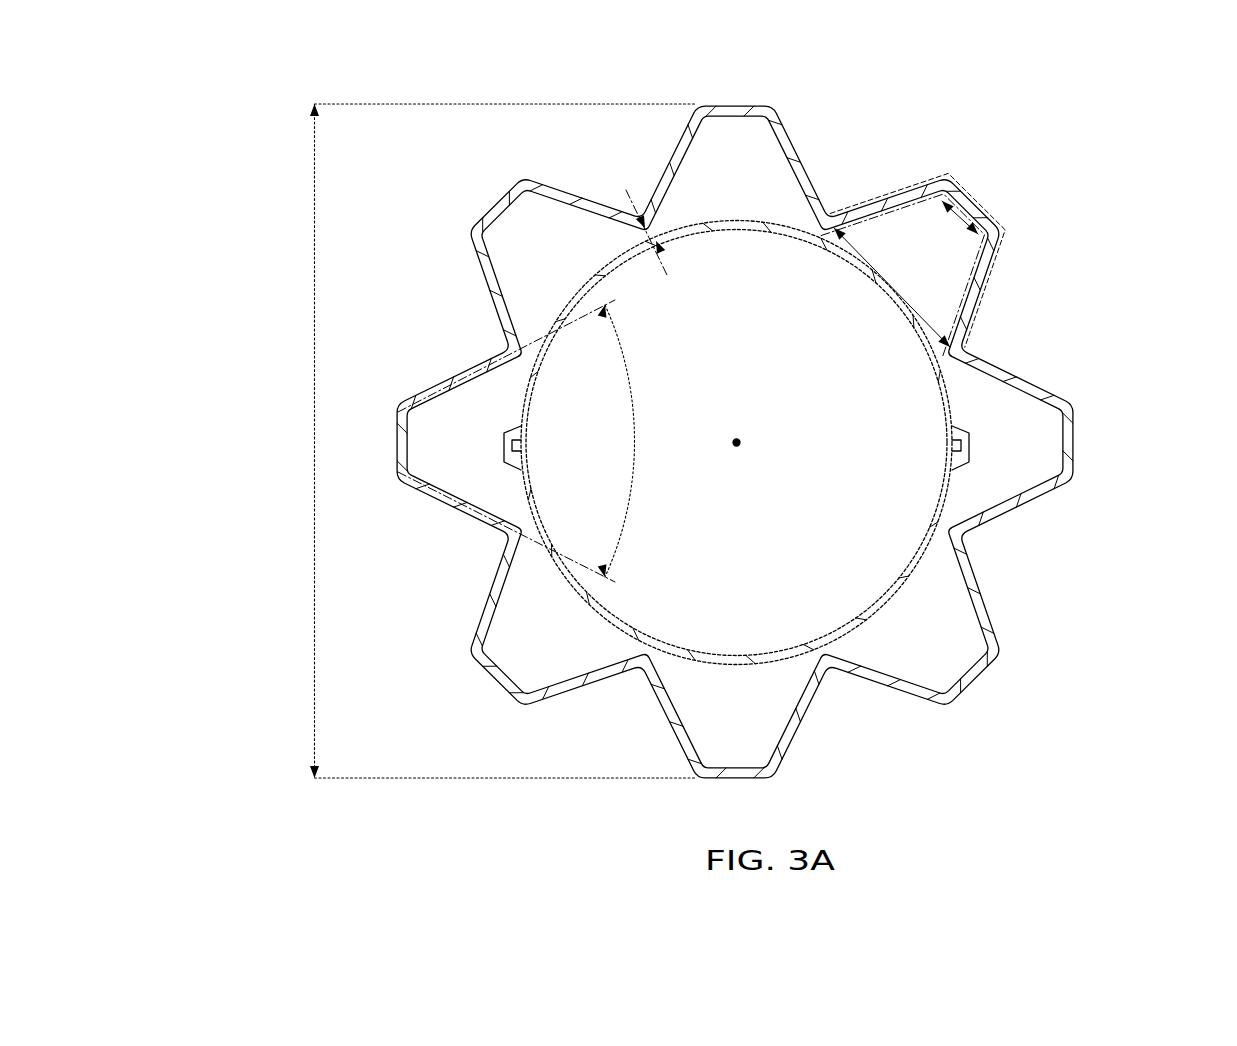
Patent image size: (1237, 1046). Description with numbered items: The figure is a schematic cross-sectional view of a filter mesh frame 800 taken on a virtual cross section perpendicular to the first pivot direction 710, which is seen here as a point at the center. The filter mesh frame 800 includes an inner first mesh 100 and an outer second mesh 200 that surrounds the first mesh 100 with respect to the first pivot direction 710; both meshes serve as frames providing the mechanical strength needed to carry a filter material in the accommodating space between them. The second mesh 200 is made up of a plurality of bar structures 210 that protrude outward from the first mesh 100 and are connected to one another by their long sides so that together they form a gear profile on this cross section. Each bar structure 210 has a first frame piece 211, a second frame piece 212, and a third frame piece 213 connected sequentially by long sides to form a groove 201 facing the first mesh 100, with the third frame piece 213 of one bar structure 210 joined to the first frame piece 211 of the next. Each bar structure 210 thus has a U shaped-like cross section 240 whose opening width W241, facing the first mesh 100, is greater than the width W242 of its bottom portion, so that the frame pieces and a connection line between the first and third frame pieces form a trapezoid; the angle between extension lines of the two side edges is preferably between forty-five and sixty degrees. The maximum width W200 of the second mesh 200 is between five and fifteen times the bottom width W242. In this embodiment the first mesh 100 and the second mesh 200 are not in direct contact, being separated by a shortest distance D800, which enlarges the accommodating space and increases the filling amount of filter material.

The first mesh 100 is at (906, 567).
The second mesh 200 is at (1034, 656).
The groove 201 is at (1022, 431).
The bar structure 210 is at (935, 108).
The first frame piece 211 is at (800, 162).
The second frame piece 212 is at (738, 105).
The third frame piece 213 is at (668, 163).
The U shaped-like cross section 240 is at (837, 214).
The first pivot direction 710 is at (735, 428).
The filter mesh frame 800 is at (258, 88).
The maximum width of the second mesh W200 is at (475, 441).
The width of the opening portion W241 is at (892, 287).
The width of the bottom portion W242 is at (942, 222).
The shortest distance between the first mesh and the second mesh D800 is at (632, 219).